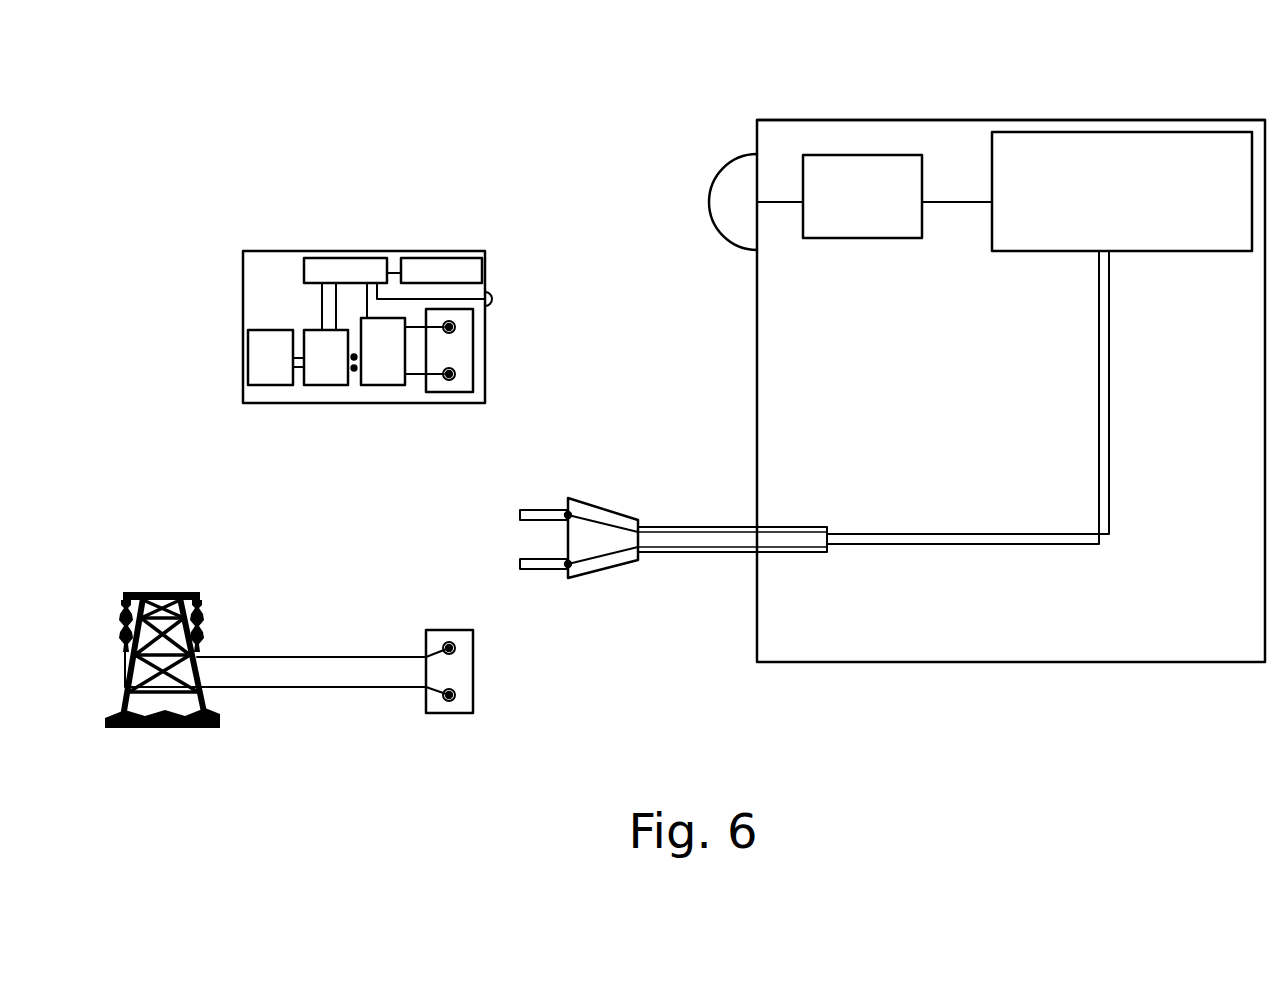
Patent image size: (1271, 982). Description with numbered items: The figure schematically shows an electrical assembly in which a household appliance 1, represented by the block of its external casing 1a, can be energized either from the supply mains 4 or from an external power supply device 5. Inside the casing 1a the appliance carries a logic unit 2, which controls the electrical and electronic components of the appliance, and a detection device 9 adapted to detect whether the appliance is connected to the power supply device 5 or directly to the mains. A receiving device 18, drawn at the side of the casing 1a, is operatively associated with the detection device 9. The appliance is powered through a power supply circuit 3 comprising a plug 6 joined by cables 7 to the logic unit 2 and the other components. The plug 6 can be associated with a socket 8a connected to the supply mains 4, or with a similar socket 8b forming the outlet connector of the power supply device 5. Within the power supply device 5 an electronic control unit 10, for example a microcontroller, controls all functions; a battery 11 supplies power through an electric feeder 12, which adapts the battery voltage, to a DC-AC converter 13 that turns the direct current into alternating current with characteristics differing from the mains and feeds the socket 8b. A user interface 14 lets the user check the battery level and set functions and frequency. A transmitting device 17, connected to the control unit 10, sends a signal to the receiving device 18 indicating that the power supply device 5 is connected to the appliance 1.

The household appliance 1 is at (1071, 90).
The external casing 1a is at (909, 119).
The logic unit 2 is at (1122, 191).
The power supply circuit 3 is at (585, 518).
The supply mains 4 is at (176, 570).
The power supply device 5 is at (421, 276).
The plug 6 is at (592, 568).
The cables 7 is at (722, 545).
The socket 8a is at (462, 675).
The socket 8b is at (462, 355).
The detection device 9 is at (862, 196).
The electronic control unit 10 is at (345, 271).
The battery 11 is at (270, 357).
The electric feeder 12 is at (326, 357).
The DC-AC converter 13 is at (383, 351).
The user interface 14 is at (441, 271).
The transmitting device 17 is at (494, 293).
The receiving device 18 is at (714, 181).